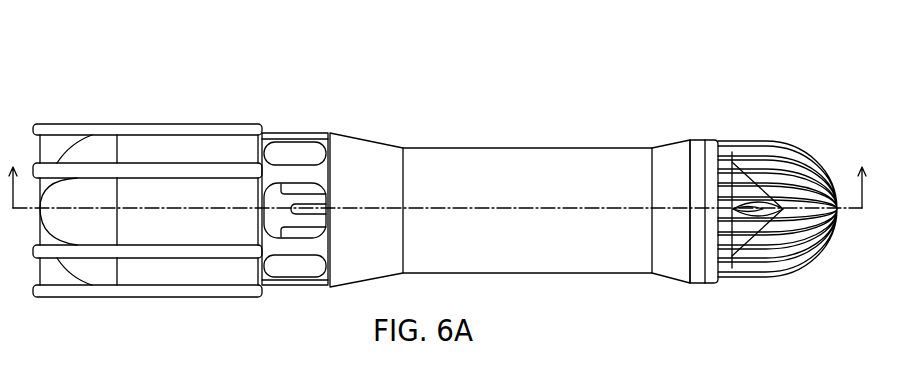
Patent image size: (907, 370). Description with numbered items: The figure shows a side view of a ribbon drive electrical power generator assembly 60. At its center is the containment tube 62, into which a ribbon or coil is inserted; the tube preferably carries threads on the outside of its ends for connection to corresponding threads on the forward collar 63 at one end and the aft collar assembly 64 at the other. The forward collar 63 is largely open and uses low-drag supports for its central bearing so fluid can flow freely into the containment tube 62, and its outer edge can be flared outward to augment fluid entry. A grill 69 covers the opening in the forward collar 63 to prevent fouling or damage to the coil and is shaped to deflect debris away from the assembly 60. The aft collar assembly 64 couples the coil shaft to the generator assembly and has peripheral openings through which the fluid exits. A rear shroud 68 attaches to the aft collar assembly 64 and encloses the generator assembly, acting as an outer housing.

The ribbon drive electrical power generator assembly 60 is at (555, 123).
The containment tube 62 is at (477, 147).
The forward collar 63 is at (688, 138).
The aft collar assembly 64 is at (370, 136).
The rear shroud 68 is at (165, 126).
The grill 69 is at (797, 142).